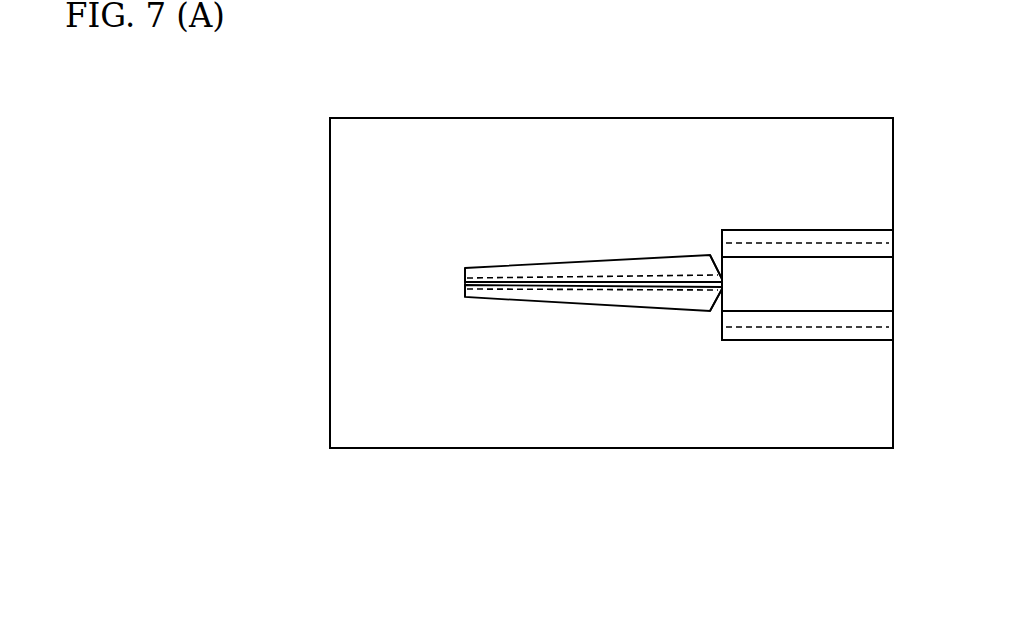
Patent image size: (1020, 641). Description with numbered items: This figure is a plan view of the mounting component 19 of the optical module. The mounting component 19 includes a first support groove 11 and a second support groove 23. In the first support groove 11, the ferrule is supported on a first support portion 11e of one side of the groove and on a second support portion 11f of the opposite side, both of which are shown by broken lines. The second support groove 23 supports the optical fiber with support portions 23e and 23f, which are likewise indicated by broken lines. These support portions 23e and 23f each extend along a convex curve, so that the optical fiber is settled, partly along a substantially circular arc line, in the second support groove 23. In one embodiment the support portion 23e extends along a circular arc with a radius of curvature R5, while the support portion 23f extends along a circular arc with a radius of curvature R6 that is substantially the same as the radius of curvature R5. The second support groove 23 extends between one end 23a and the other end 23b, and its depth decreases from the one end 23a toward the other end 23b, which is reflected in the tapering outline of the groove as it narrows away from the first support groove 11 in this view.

The mounting component 19 is at (832, 448).
The first support groove 11 is at (818, 243).
The second support portion 11f is at (767, 243).
The first support portion 11e is at (787, 327).
The second support groove 23 is at (670, 264).
The other end 23b is at (465, 278).
The one end 23a is at (717, 313).
The support portion 23e is at (517, 275).
The support portion 23f is at (515, 298).
The radius of curvature R6 is at (580, 283).
The radius of curvature R5 is at (556, 284).